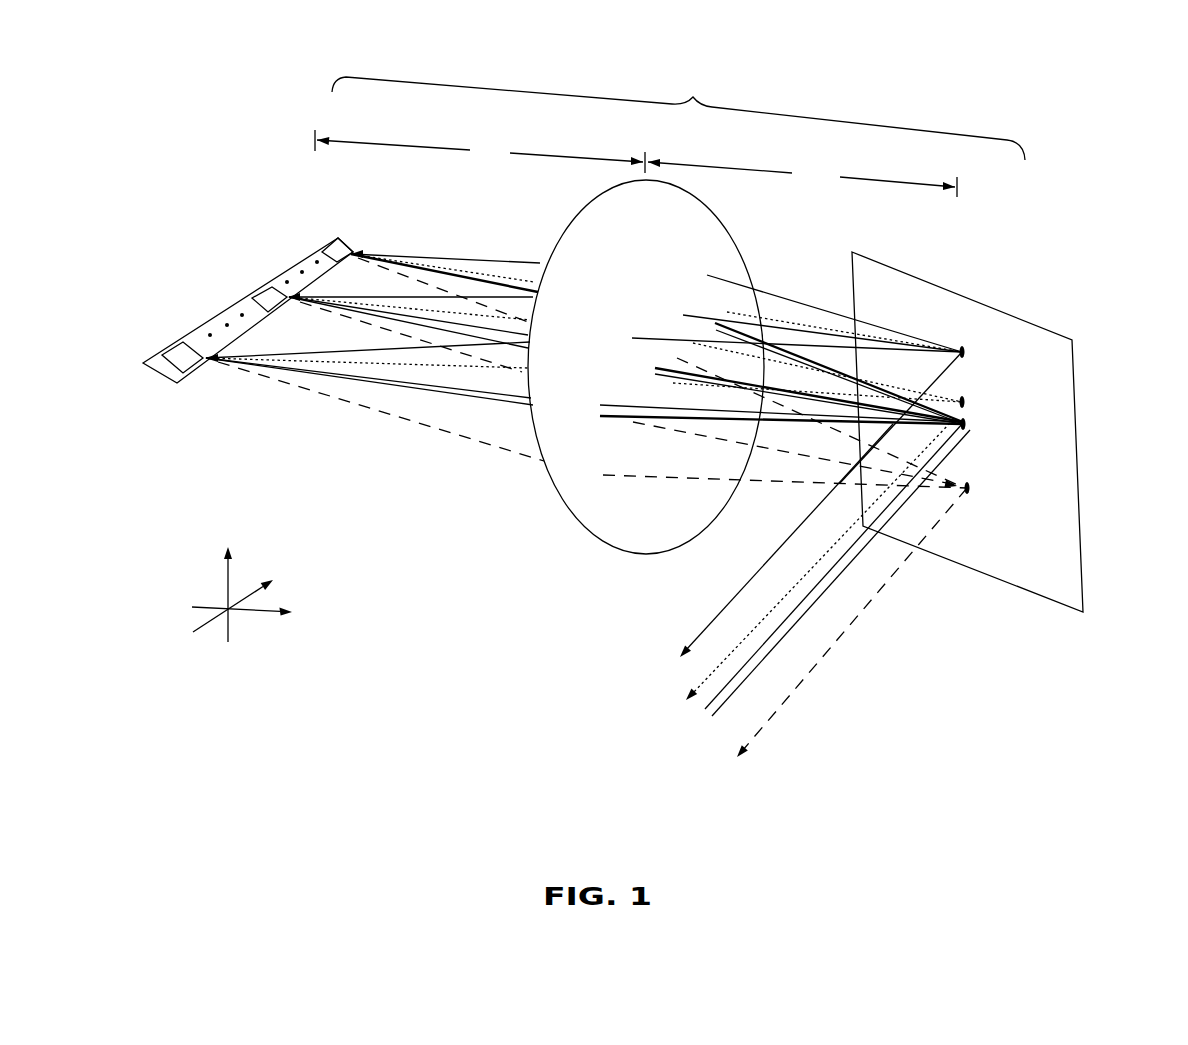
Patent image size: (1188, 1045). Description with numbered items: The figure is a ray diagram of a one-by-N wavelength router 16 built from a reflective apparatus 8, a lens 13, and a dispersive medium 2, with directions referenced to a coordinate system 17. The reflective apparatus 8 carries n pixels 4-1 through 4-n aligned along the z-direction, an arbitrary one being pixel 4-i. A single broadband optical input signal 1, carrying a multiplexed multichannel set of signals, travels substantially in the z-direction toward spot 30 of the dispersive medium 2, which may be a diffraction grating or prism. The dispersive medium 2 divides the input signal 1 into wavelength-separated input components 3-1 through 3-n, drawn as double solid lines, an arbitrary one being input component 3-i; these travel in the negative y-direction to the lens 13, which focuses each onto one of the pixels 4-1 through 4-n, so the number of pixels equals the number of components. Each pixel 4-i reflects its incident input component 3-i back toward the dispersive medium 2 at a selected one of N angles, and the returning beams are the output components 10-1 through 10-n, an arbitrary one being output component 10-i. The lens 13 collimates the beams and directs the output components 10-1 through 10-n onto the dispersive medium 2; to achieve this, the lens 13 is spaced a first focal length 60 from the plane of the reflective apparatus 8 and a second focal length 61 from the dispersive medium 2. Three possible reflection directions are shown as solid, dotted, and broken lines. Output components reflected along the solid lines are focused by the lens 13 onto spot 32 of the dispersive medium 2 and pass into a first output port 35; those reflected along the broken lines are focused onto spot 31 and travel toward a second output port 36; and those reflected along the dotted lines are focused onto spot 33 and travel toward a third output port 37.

The optical input signal 1 is at (698, 721).
The dispersive medium 2 is at (1037, 340).
The wavelength-separated input component 3-1 is at (790, 421).
The input component 3-i is at (672, 378).
The wavelength-separated input component 3-n is at (715, 325).
The pixel 4-1 is at (174, 353).
The pixel 4-i is at (262, 288).
The pixel 4-n is at (327, 238).
The reflective apparatus 8 is at (207, 330).
The output component 10-1 is at (348, 347).
The output component 10-i is at (373, 297).
The output component 10-n is at (505, 260).
The lens 13 is at (705, 243).
The 1×N router 16 is at (678, 111).
The coordinate system 17 is at (158, 543).
The spot 30 is at (967, 425).
The spot 31 is at (971, 488).
The spot 32 is at (966, 352).
The spot 33 is at (966, 402).
The first output port 35 is at (713, 556).
The second output port 36 is at (827, 639).
The third output port 37 is at (742, 575).
The first focal length 60 is at (479, 148).
The second focal length 61 is at (801, 174).